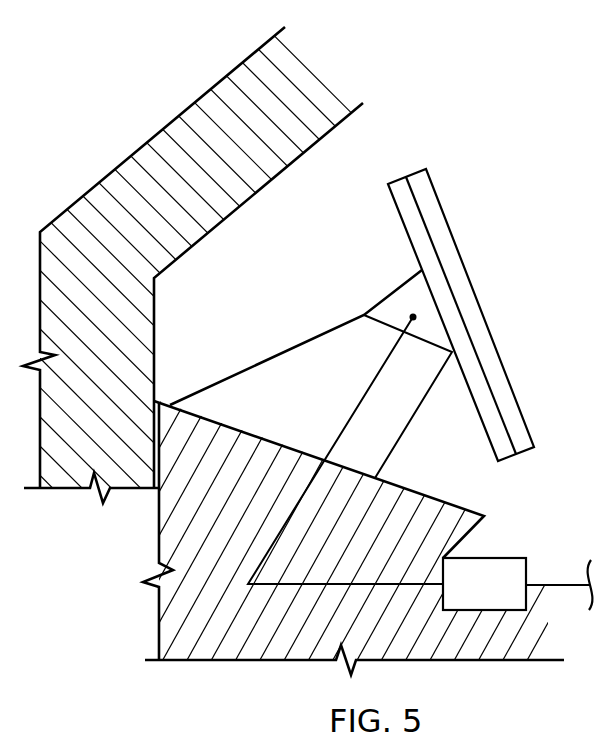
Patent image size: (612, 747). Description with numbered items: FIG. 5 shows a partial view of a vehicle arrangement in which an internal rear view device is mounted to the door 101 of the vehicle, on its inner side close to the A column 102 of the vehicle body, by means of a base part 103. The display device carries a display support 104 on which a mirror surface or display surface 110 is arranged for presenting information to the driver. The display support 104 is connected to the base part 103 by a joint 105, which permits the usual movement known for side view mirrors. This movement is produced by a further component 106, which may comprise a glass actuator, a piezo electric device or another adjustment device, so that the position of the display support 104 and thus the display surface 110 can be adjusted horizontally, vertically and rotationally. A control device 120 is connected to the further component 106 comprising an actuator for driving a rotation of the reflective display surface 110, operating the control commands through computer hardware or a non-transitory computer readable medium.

The door 101 is at (192, 591).
The A column 102 is at (143, 205).
The base part 103 is at (288, 395).
The display support 104 is at (408, 209).
The joint 105 is at (434, 350).
The further component 106 is at (413, 301).
The display surface 110 is at (423, 190).
The control device 120 is at (491, 592).